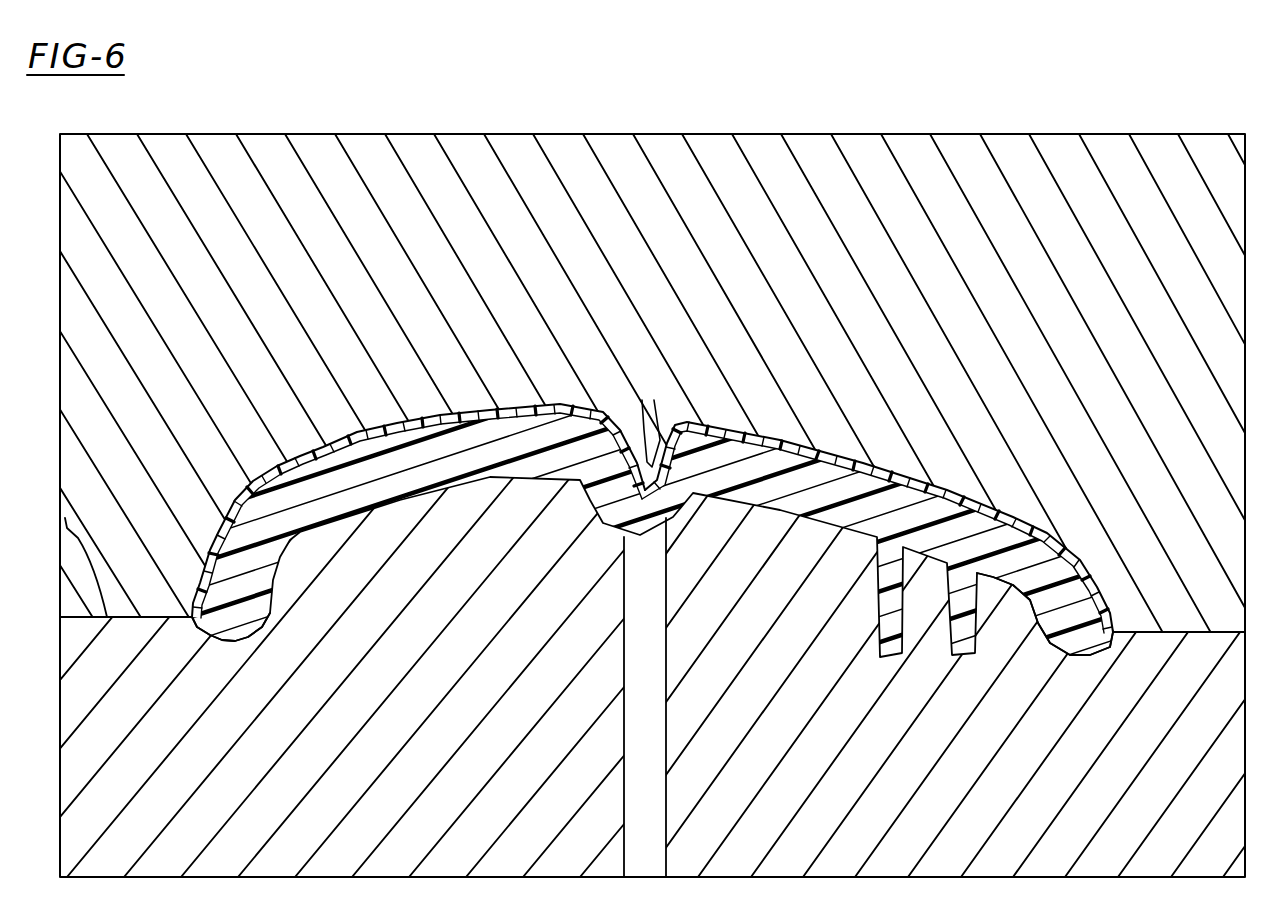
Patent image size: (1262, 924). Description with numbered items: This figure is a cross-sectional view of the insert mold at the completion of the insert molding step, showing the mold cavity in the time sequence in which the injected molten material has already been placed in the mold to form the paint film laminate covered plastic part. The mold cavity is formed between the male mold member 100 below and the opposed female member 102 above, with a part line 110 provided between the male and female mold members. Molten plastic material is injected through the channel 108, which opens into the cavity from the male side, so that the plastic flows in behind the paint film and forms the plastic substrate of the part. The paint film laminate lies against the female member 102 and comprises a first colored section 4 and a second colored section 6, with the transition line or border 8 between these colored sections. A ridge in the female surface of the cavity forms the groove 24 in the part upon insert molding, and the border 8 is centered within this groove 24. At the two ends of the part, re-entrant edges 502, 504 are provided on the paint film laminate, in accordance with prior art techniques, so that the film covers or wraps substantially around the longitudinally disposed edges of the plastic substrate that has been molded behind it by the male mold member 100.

The female mold member 102 is at (275, 160).
The male mold member 100 is at (500, 852).
The channel 108 is at (653, 850).
The part line 110 is at (65, 518).
The groove 24 is at (660, 490).
The first colored section 4 is at (430, 430).
The second colored section 6 is at (855, 442).
The transition line 8 is at (641, 405).
The re-entrant edge 502 is at (213, 640).
The re-entrant edge 504 is at (1097, 663).